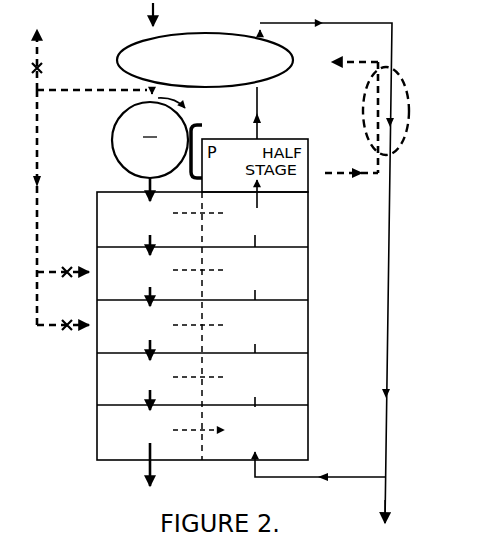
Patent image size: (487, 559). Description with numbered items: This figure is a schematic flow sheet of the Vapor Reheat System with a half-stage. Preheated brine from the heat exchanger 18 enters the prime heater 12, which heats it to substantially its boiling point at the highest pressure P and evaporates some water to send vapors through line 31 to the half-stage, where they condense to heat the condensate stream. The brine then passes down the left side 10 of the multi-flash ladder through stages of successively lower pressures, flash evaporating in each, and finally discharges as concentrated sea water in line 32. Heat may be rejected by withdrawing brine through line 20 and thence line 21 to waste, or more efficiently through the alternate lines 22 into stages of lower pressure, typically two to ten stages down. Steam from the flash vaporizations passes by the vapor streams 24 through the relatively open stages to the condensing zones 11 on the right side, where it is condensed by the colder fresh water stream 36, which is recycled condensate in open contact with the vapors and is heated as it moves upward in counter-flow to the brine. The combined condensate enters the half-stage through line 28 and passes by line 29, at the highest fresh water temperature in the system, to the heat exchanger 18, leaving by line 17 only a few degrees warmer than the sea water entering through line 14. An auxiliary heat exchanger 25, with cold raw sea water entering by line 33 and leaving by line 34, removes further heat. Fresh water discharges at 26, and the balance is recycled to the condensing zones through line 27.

The left side of the multi-flash ladder of stages 10 is at (105, 202).
The condensing zones 11 is at (308, 222).
The prime heater 12 is at (119, 118).
The sea water-in line 14 is at (154, 13).
The heat exchanger outlet line 17 is at (372, 24).
The heat exchanger 18 is at (222, 40).
The heat reject brine withdrawal line 20 is at (60, 90).
The waste line 21 is at (41, 42).
The alternate lines 22 is at (42, 270).
The vapor streams 24 is at (192, 215).
The auxiliary heat exchanger 25 is at (396, 82).
The fresh water discharge 26 is at (384, 490).
The recycle line 27 is at (366, 477).
The half stage inlet line 28 is at (257, 188).
The half stage outlet line 29 is at (258, 100).
The vapor line 31 is at (198, 131).
The concentrated sea water line 32 is at (156, 474).
The sea water inlet line of auxiliary heat exchanger 33 is at (101, 140).
The sea water outlet line of auxiliary heat exchanger 34 is at (366, 62).
The fresh water stream 36 is at (258, 229).